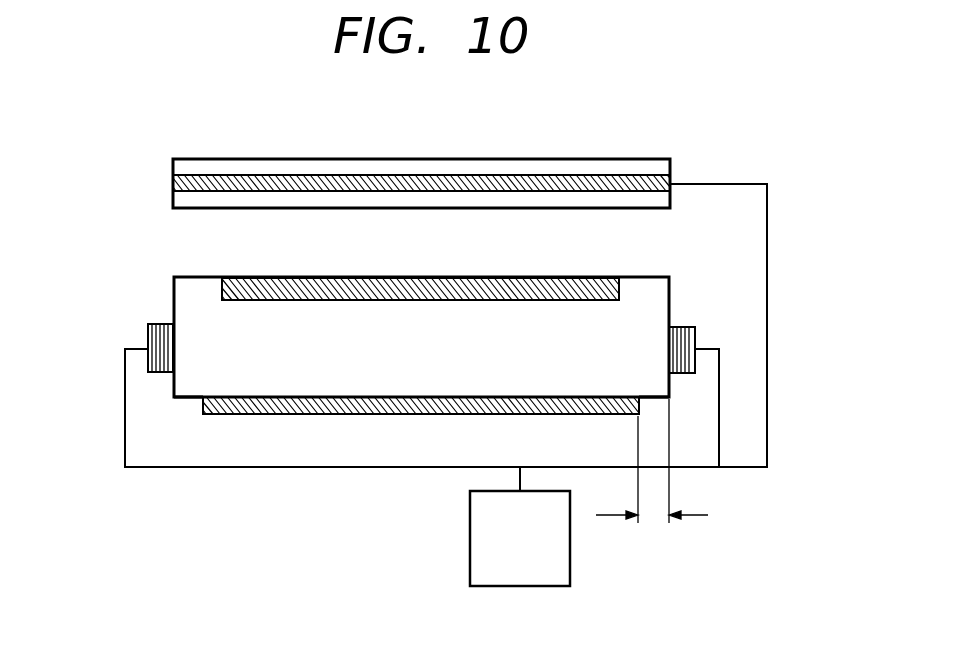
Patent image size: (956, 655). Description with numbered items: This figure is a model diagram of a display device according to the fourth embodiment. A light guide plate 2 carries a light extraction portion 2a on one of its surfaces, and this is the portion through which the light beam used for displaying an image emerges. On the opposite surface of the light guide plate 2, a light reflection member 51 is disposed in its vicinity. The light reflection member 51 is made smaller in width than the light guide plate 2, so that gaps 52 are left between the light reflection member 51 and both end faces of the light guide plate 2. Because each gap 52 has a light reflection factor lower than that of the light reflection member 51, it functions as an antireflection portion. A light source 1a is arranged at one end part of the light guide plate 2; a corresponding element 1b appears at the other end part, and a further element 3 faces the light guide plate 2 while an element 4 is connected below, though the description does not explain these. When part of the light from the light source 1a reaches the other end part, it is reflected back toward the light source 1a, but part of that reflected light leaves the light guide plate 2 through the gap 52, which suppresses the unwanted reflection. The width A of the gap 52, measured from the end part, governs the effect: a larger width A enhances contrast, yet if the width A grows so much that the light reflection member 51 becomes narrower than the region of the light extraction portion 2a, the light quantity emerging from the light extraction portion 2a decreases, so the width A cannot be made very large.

The substrate / counter plate 3 is at (573, 167).
The light guide plate 2 is at (270, 372).
The light extraction portion 2a is at (428, 287).
The light reflection member 51 is at (313, 400).
The gap 52 is at (187, 398).
The light source 1a is at (156, 334).
The right terminal 1b is at (685, 340).
The power supply unit 4 is at (498, 563).
The width of the gap A is at (652, 472).